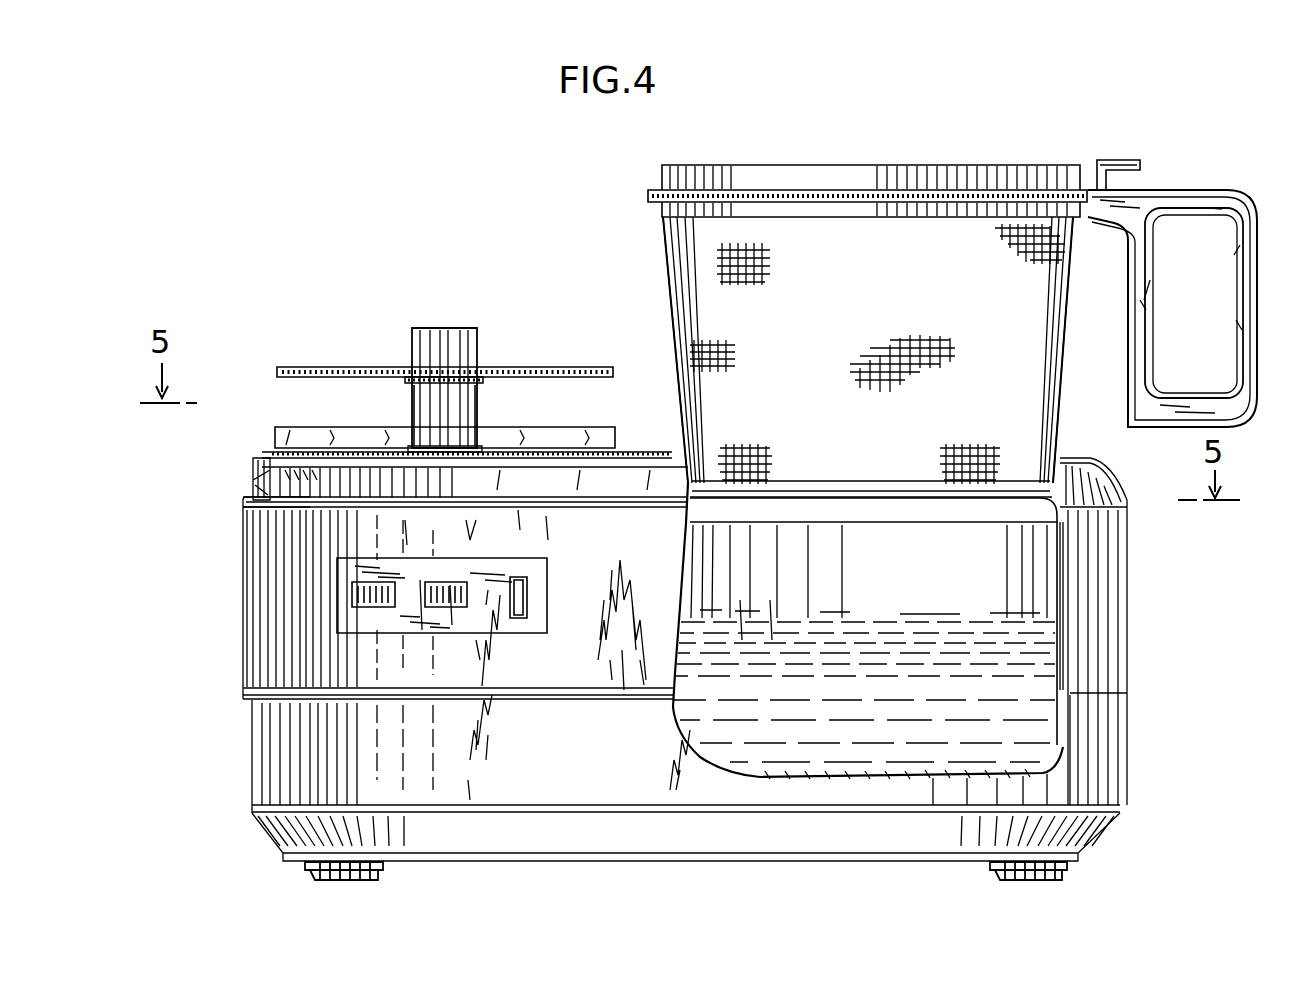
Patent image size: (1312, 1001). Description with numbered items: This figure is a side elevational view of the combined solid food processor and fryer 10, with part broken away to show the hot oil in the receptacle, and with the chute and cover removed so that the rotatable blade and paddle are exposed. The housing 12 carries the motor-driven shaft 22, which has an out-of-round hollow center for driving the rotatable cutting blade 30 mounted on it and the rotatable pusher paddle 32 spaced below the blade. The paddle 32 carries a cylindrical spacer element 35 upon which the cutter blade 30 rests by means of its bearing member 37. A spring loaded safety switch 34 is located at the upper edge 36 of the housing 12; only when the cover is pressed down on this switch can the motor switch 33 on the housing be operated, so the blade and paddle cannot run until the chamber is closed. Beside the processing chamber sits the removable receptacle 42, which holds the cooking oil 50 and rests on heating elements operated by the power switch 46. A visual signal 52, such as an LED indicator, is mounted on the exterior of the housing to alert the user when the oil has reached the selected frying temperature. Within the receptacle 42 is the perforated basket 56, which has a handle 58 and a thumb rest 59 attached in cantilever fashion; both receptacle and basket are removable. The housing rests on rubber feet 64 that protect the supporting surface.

The solid food processor and fryer 10 is at (409, 199).
The housing 12 is at (243, 635).
The shaft 22 is at (463, 328).
The rotatable cutting blade 30 is at (315, 365).
The rotatable pusher paddle 32 is at (550, 427).
The motor switch 33 is at (450, 607).
The spring loaded safety switch 34 is at (262, 490).
The cylindrical spacer element 35 is at (477, 403).
The upper edge 36 is at (245, 503).
The bearing member 37 is at (413, 412).
The receptacle 42 is at (1060, 757).
The power switch 46 is at (397, 592).
The cooking oil 50 is at (918, 622).
The visual signal 52 is at (527, 608).
The perforated basket 56 is at (672, 302).
The handle 58 is at (1240, 190).
The thumb rest 59 is at (1095, 168).
The rubber feet 64 is at (374, 878).